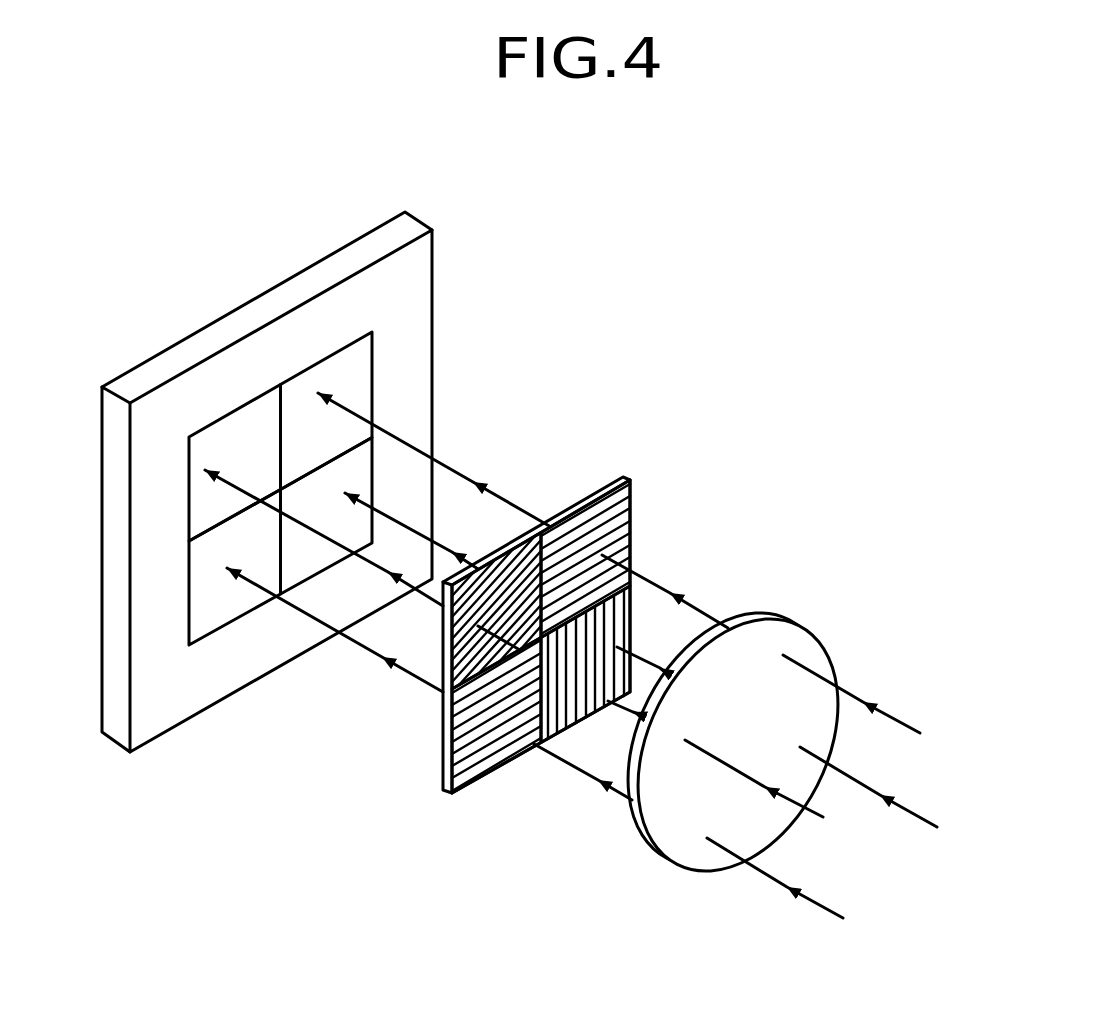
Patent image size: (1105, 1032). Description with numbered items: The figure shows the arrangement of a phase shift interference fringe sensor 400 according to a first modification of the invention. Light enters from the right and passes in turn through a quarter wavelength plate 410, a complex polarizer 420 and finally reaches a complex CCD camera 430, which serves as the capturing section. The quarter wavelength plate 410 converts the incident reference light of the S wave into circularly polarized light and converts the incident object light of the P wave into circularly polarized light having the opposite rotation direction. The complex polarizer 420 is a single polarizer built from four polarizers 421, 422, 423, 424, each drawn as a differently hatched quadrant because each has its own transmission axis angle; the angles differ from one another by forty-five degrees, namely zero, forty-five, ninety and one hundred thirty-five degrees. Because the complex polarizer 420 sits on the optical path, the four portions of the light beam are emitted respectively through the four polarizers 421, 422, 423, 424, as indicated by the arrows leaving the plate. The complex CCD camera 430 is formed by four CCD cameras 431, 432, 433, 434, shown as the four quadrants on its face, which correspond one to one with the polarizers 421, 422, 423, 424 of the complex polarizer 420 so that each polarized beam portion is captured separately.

The phase shift interference fringe sensor 400 is at (996, 502).
The quarter wavelength plate 410 is at (810, 647).
The complex polarizer 420 is at (633, 500).
The polarizer 421 is at (592, 513).
The polarizer 422 is at (507, 563).
The polarizer 423 is at (448, 733).
The polarizer 424 is at (577, 727).
The complex CCD camera 430 is at (420, 282).
The CCD camera 431 is at (335, 372).
The CCD camera 432 is at (230, 433).
The CCD camera 433 is at (218, 613).
The CCD camera 434 is at (358, 462).